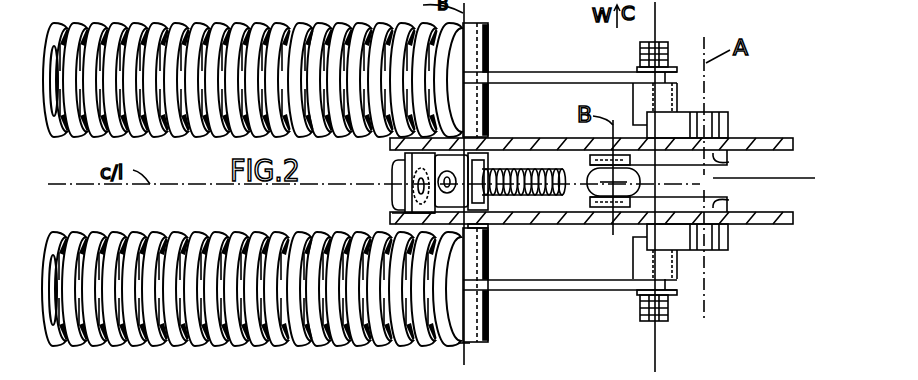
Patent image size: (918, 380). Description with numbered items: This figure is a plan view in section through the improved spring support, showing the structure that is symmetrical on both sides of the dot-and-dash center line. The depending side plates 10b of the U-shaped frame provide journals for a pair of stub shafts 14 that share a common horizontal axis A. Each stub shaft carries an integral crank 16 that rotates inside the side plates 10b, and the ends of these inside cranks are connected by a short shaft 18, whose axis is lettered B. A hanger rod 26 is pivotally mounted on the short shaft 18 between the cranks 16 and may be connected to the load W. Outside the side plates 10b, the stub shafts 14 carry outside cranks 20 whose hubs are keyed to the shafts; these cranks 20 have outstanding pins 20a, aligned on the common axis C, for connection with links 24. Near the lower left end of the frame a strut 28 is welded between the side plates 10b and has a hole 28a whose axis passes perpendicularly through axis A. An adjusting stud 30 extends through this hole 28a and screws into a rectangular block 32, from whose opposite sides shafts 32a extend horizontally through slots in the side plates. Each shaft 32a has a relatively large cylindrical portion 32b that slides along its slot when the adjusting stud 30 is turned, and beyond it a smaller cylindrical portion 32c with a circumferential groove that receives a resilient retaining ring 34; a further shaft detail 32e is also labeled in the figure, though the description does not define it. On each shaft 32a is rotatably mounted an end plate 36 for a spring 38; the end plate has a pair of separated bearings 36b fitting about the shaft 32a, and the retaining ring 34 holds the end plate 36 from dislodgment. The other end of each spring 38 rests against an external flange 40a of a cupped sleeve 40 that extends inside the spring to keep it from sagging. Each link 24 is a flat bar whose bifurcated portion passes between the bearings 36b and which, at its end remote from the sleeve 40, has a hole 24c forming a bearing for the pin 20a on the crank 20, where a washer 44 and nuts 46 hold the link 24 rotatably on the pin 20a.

The side plates 10b is at (764, 137).
The stub shafts 14 is at (729, 117).
The crank 16 is at (729, 160).
The short shaft 18 is at (569, 174).
The outside cranks 20 is at (633, 95).
The pins 20a is at (660, 34).
The link 24 is at (554, 72).
The hole 24c is at (678, 77).
The hanger rod 26 is at (641, 184).
The strut 28 is at (397, 204).
The hole 28a is at (395, 215).
The adjusting stud 30 is at (392, 170).
The rectangular block 32 is at (488, 165).
The shafts 32a is at (475, 345).
The large cylindrical portion 32b is at (497, 130).
The smaller cylindrical portion 32c is at (493, 132).
The spacer 32e is at (480, 228).
The retaining ring 34 is at (489, 26).
The end plate 36 is at (489, 52).
The bearings 36b is at (490, 262).
The spring 38 is at (150, 24).
The cupped sleeve 40 is at (205, 134).
The external flange 40a is at (56, 24).
The washer 44 is at (638, 68).
The nuts 46 is at (641, 48).